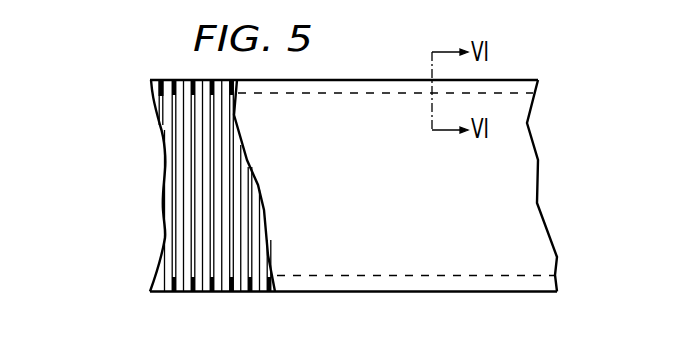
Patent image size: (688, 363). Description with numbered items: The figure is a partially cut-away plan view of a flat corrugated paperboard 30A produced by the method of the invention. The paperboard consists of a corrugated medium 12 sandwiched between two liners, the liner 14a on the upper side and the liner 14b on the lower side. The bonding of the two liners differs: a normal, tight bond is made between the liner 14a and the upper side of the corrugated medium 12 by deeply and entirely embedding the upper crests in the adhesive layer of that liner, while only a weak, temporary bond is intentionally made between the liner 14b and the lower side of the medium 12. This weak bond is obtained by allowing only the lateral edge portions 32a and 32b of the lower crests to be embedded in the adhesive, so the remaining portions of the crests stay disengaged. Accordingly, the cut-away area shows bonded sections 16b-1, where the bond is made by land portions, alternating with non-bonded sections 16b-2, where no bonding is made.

The flat corrugated paperboard 30A is at (515, 73).
The liner 14a is at (520, 157).
The liner 14b is at (163, 168).
The corrugated medium 12 is at (208, 205).
The bonded sections 16b-1 is at (161, 95).
The non-bonded sections 16b-2 is at (194, 260).
The lateral edge portion 32a is at (275, 94).
The lateral edge portion 32b is at (365, 277).